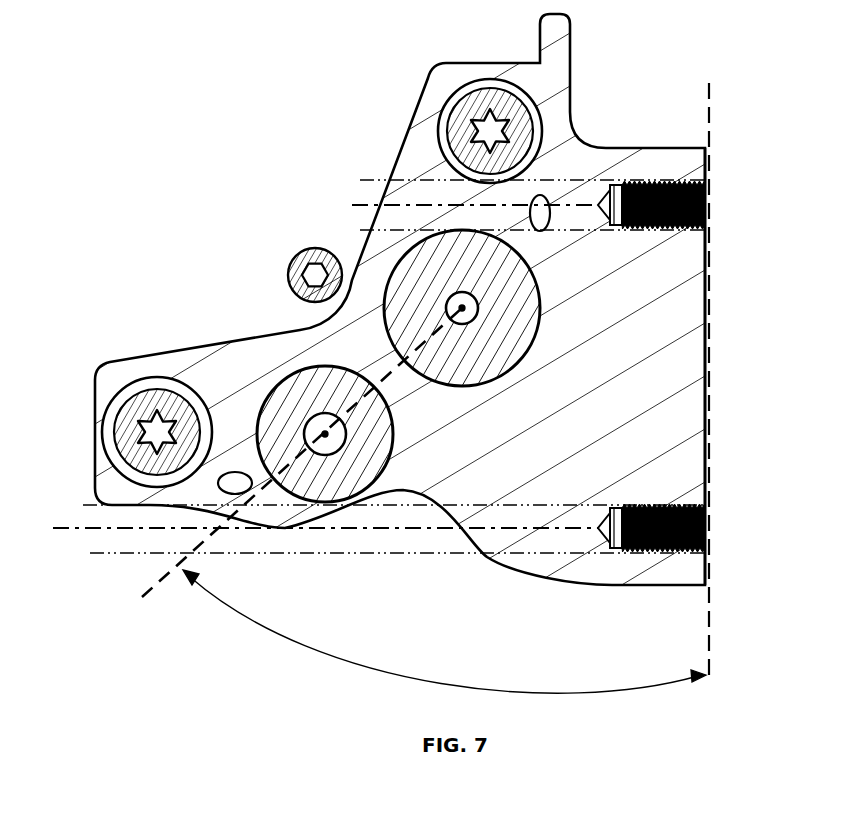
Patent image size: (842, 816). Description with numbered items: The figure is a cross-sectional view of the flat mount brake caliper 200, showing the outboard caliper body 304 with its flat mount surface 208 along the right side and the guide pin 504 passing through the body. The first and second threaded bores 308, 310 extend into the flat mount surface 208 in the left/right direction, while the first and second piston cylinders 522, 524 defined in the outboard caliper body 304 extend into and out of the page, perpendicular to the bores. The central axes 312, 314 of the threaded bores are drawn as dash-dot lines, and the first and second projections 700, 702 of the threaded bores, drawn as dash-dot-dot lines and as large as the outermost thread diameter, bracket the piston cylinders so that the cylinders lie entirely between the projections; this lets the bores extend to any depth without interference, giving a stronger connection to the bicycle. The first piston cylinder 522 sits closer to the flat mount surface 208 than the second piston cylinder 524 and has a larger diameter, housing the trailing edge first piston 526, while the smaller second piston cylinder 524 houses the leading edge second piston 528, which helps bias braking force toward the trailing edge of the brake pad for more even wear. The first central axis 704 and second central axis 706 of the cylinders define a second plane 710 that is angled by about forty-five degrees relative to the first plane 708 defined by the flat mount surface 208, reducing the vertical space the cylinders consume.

The flat mount brake caliper 200 is at (208, 137).
The flat mount surface 208 is at (709, 350).
The outboard caliper body 304 is at (578, 153).
The first threaded bore 308 is at (712, 204).
The second threaded bore 310 is at (713, 514).
The central axis of first threaded bore 312 is at (370, 205).
The central axis of second threaded bore 314 is at (365, 530).
The guide pin 504 is at (288, 273).
The first piston cylinder 522 is at (392, 255).
The second piston cylinder 524 is at (283, 361).
The first piston 526 is at (513, 297).
The second piston 528 is at (377, 413).
The first projection 700 is at (368, 180).
The second projection 702 is at (397, 553).
The first central axis 704 is at (480, 318).
The second central axis 706 is at (350, 437).
The first plane 708 is at (711, 630).
The second plane 710 is at (140, 593).